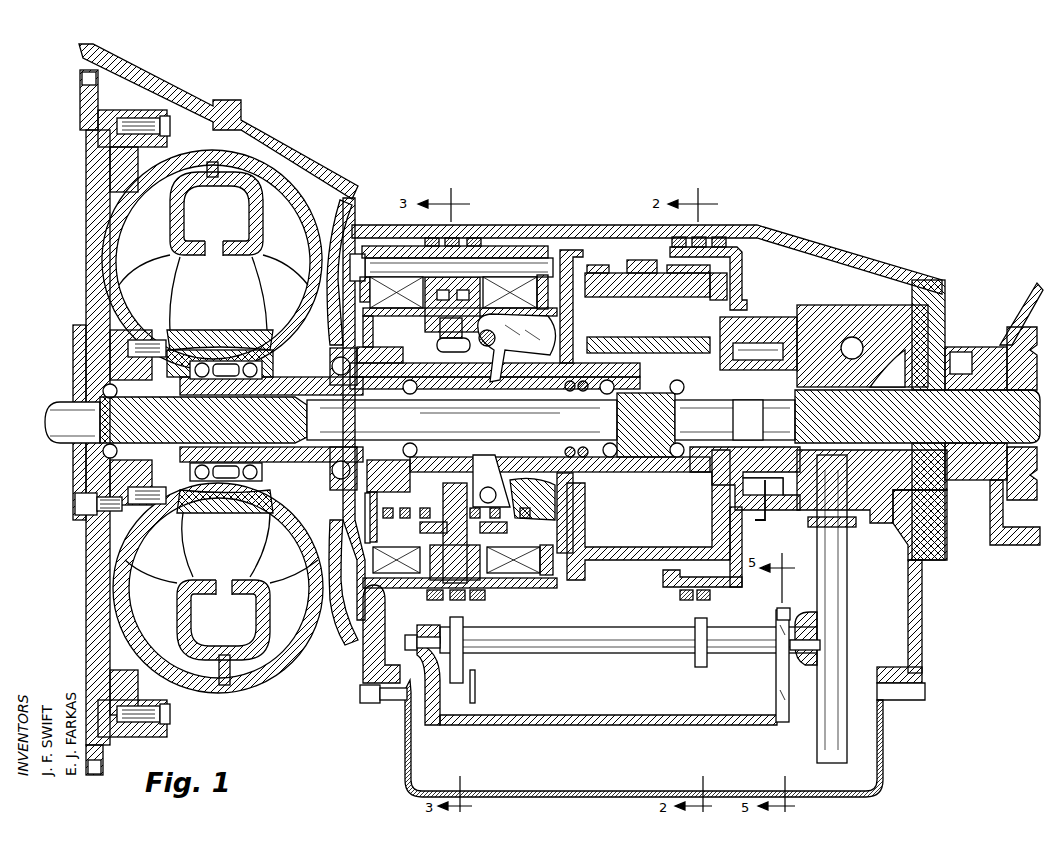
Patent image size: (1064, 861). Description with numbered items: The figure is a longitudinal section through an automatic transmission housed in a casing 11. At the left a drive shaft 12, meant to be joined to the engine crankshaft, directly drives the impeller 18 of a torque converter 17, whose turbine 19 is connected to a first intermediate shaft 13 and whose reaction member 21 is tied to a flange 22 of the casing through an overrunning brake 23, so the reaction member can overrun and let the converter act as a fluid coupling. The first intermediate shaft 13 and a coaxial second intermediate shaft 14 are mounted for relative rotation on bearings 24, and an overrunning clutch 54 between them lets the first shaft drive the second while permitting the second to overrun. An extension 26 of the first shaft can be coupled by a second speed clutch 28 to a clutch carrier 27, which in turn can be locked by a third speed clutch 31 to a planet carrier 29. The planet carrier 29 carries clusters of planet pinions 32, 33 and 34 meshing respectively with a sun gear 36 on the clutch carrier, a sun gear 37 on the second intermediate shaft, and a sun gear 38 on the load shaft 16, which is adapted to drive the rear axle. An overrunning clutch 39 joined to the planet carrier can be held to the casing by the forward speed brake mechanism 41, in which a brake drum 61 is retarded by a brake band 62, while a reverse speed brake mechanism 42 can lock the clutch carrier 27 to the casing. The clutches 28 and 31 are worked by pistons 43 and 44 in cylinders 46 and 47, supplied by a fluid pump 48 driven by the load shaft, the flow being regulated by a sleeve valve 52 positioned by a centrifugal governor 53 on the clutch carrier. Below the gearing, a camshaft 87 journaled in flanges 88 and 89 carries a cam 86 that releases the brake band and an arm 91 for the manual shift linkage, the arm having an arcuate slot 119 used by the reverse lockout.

The transmission casing 11 is at (548, 228).
The drive shaft 12 is at (55, 415).
The first intermediate shaft 13 is at (143, 415).
The second intermediate shaft 14 is at (95, 502).
The load shaft 16 is at (985, 385).
The torque converter 17 is at (307, 177).
The impeller 18 is at (284, 231).
The turbine 19 is at (158, 231).
The reaction member 21 is at (220, 311).
The flange 22 is at (328, 292).
The overrunning brake 23 is at (226, 362).
The bearings 24 is at (385, 420).
The extension 26 is at (378, 350).
The clutch carrier 27 is at (505, 250).
The second speed clutch 28 is at (405, 288).
The planet carrier 29 is at (575, 270).
The third speed clutch 31 is at (510, 278).
The planet pinions 32 is at (607, 280).
The planet pinions 33 is at (641, 278).
The planet pinions 34 is at (685, 280).
The sun gear 36 is at (592, 466).
The sun gear 37 is at (640, 465).
The sun gear 38 is at (688, 470).
The overrunning clutch 39 is at (768, 500).
The forward speed brake mechanism 41 is at (668, 590).
The reverse speed brake mechanism 42 is at (500, 600).
The piston 43 is at (355, 409).
The piston 44 is at (468, 586).
The cylinder 46 is at (425, 580).
The cylinder 47 is at (495, 580).
The fluid pump 48 is at (915, 365).
The sleeve valve 52 is at (470, 382).
The centrifugal governor 53 is at (519, 380).
The overrunning clutch 54 is at (358, 495).
The brake drum 61 is at (675, 577).
The brake band 62 is at (690, 602).
The cam 86 is at (706, 648).
The camshaft 87 is at (623, 652).
The flange 88 is at (400, 700).
The flange 89 is at (822, 627).
The arm 91 is at (780, 683).
The arcuate slot 119 is at (788, 607).